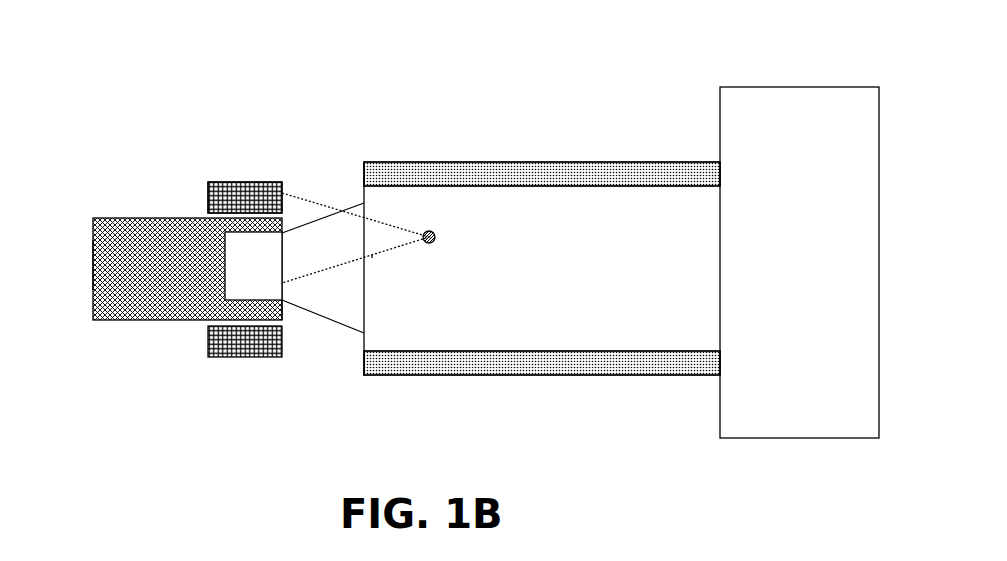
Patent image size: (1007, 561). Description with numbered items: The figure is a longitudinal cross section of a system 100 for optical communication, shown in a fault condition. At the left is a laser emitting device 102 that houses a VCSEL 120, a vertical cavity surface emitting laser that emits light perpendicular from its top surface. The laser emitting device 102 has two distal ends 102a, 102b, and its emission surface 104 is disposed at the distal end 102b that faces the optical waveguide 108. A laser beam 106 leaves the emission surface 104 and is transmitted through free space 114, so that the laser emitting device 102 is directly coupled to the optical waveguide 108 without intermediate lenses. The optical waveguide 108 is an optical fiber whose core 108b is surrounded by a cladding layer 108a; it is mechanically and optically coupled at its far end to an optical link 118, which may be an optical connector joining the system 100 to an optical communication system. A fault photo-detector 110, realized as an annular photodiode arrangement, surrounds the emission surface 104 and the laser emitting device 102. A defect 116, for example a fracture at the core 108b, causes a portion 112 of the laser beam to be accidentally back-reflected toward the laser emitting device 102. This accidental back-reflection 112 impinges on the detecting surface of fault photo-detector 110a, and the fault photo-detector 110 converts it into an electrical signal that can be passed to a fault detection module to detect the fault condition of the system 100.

The system 100 is at (212, 66).
The laser emitting device 102 is at (93, 300).
The distal end 102a is at (282, 310).
The distal end 102b is at (93, 262).
The emission surface 104 is at (285, 270).
The laser beam 106 is at (345, 330).
The optical waveguide 108 is at (563, 162).
The cladding layer 108a is at (635, 178).
The core 108b is at (655, 333).
The fault photo-detector 110 is at (208, 195).
The detecting surface of fault photo-detector 110a is at (282, 185).
The portion of the laser beam (accidental back-reflection) 112 is at (372, 255).
The free space 114 is at (344, 180).
The defect 116 is at (435, 233).
The optical link 118 is at (767, 422).
The VCSEL 120 is at (271, 276).